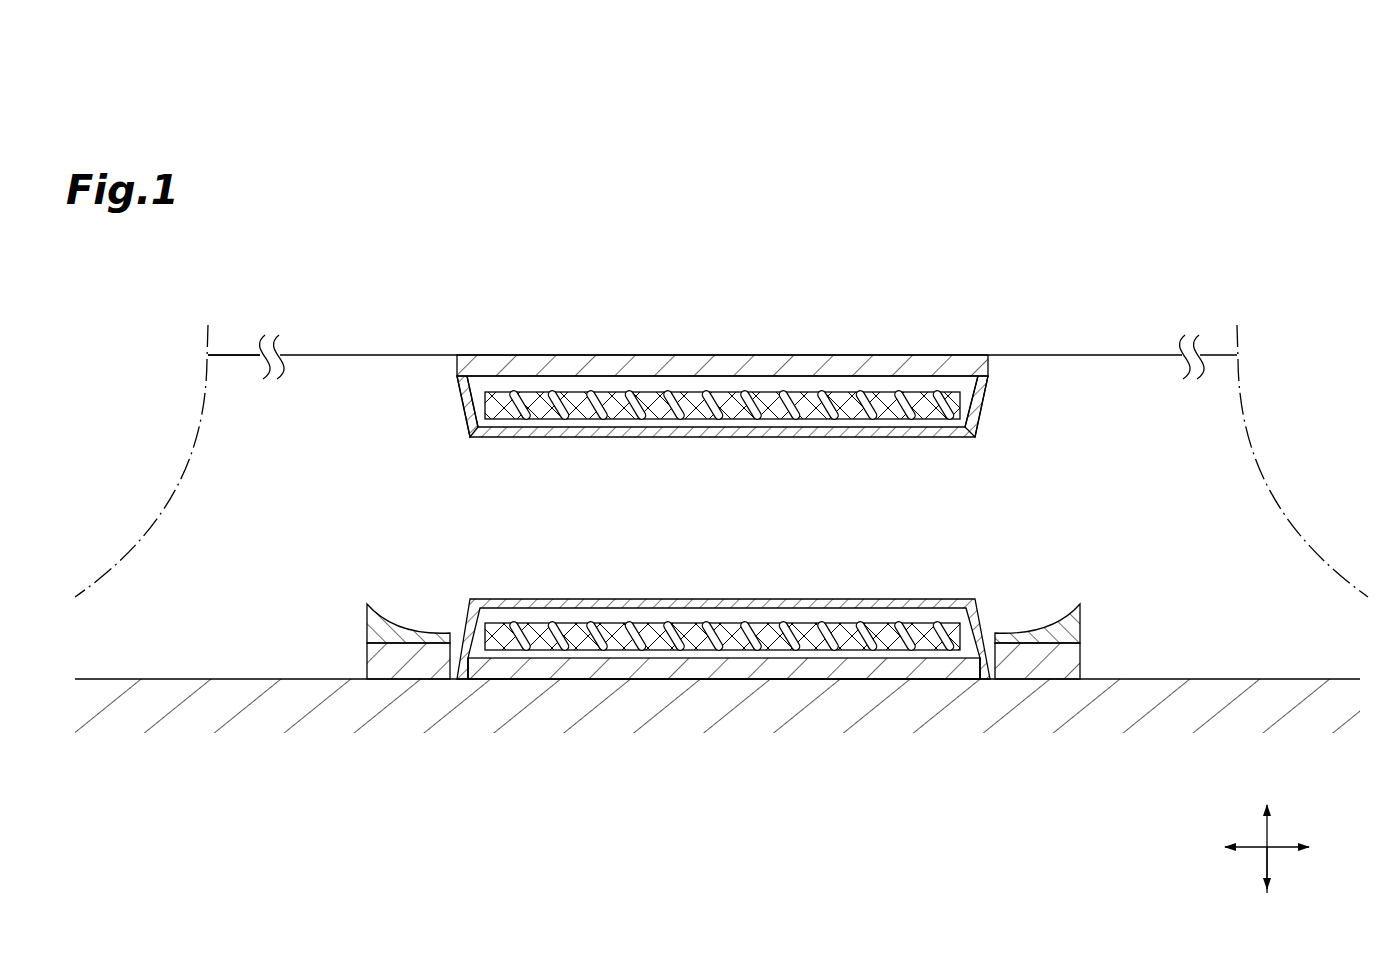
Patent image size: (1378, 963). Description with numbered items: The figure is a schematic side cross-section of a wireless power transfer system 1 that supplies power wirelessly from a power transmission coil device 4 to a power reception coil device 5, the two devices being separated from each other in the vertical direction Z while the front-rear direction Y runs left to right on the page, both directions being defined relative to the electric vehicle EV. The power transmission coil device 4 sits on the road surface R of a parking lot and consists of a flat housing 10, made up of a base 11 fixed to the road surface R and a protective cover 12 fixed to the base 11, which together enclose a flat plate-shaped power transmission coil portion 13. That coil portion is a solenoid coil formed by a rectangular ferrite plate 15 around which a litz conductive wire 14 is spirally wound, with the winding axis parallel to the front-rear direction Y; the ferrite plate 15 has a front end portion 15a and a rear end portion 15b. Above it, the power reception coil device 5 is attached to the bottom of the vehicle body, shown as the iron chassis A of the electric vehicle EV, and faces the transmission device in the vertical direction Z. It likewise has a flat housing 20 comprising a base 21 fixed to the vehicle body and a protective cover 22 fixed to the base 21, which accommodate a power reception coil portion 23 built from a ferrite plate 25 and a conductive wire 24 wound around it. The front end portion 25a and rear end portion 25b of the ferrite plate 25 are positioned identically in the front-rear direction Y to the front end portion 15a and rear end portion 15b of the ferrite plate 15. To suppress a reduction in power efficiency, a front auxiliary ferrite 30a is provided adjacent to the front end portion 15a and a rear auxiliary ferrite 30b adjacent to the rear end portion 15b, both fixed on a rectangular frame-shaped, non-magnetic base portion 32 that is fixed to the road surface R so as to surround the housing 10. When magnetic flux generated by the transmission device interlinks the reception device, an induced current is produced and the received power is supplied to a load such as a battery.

The wireless power transfer system 1 is at (504, 274).
The power transmission coil device 4 is at (695, 662).
The power reception coil device 5 is at (744, 378).
The housing 10 is at (782, 640).
The base 11 is at (757, 667).
The protective cover 12 is at (975, 600).
The power transmission coil portion 13 is at (722, 719).
The conductive wire 14 is at (752, 656).
The ferrite plate 15 is at (698, 652).
The front end portion 15a is at (473, 660).
The rear end portion 15b is at (965, 660).
The housing 20 is at (785, 434).
The base 21 is at (990, 375).
The protective cover 22 is at (759, 445).
The power reception coil portion 23 is at (722, 331).
The conductive wire 24 is at (783, 284).
The ferrite plate 25 is at (762, 388).
The front end portion 25a is at (476, 440).
The rear end portion 25b is at (970, 440).
The front auxiliary ferrite 30a is at (367, 624).
The rear auxiliary ferrite 30b is at (1080, 622).
The base portion 32 is at (367, 660).
The iron chassis A is at (305, 362).
The road surface R is at (150, 679).
The electric vehicle EV is at (1207, 453).
The vertical direction Z is at (1266, 832).
The front-rear direction Y is at (1253, 848).